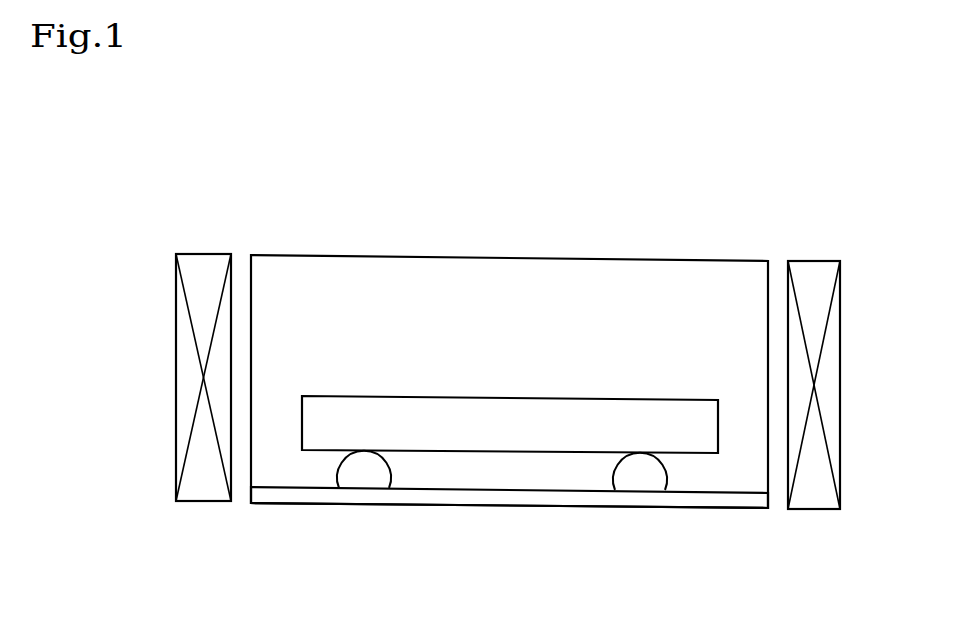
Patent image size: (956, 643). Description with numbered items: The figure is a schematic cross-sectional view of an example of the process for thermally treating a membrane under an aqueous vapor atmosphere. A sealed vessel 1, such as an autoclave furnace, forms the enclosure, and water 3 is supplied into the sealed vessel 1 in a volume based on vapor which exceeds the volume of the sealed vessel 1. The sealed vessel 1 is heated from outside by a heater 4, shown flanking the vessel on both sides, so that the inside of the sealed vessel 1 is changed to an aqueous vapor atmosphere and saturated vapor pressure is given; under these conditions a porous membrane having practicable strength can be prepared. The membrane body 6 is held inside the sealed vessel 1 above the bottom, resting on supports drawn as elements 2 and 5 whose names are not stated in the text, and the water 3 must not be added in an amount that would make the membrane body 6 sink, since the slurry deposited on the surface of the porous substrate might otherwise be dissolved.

The sealed vessel 1 is at (386, 257).
The base plate 2 is at (427, 471).
The water 3 is at (613, 503).
The heater 4 is at (843, 288).
The right support 5 is at (663, 477).
The membrane body 6 is at (532, 438).